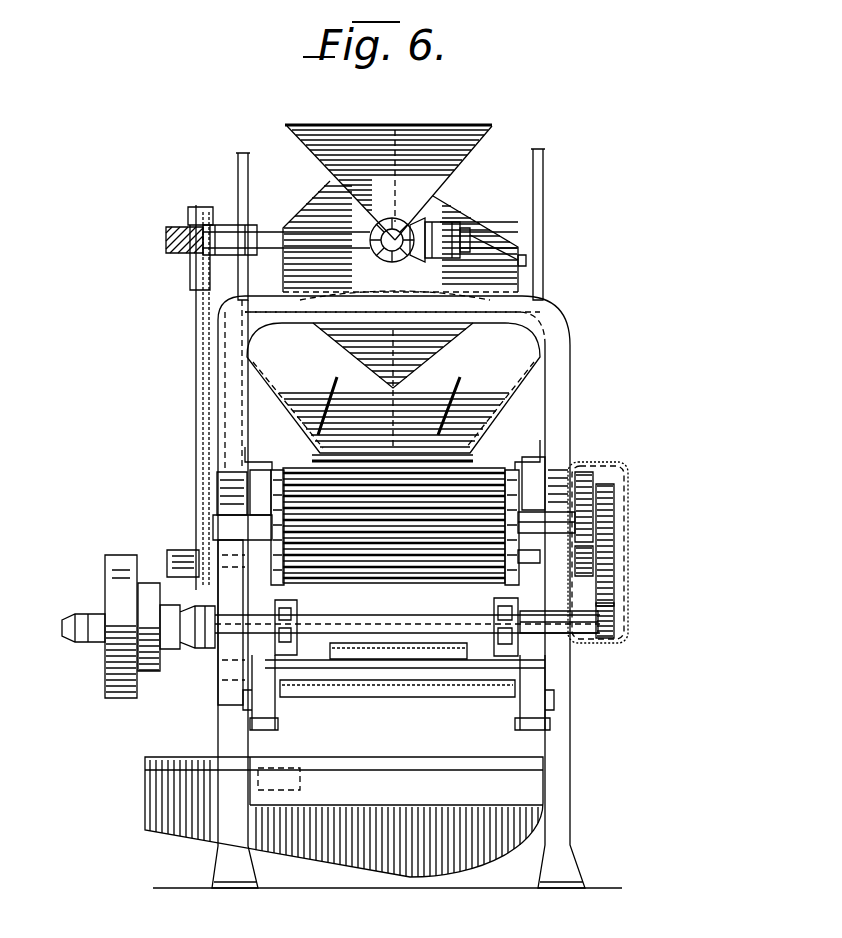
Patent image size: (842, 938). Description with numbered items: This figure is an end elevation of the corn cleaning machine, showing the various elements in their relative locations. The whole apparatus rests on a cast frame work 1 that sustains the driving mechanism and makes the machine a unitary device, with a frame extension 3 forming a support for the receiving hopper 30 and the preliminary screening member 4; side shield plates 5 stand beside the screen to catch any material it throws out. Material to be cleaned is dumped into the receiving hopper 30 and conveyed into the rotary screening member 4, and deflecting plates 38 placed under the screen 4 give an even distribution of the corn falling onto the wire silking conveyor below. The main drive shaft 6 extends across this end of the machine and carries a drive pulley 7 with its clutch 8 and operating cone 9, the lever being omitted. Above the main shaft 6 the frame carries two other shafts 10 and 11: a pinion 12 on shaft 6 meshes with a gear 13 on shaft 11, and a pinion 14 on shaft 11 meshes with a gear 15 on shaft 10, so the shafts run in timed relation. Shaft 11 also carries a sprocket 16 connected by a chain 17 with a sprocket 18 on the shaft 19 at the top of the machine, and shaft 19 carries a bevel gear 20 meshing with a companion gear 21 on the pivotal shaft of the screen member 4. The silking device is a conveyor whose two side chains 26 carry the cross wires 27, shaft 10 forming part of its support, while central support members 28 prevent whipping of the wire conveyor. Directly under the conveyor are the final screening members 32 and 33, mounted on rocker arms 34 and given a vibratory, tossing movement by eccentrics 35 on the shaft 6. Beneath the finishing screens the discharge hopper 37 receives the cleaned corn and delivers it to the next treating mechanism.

The cast frame work 1 is at (220, 738).
The frame extension 3 is at (557, 382).
The preliminary screening member 4 is at (472, 236).
The side shield plates 5 is at (240, 190).
The main drive shaft 6 is at (368, 632).
The drive pulley 7 is at (118, 590).
The clutch 8 is at (147, 672).
The operating cone 9 is at (193, 650).
The shaft 10 is at (558, 534).
The shaft 11 is at (535, 562).
The pinion 12 is at (604, 638).
The gear 13 is at (612, 518).
The pinion 14 is at (584, 576).
The gear 15 is at (583, 474).
The sprocket 16 is at (222, 560).
The chain 17 is at (200, 343).
The sprocket 18 is at (180, 252).
The shaft 19 is at (262, 232).
The bevel gear 20 is at (455, 226).
The companion gear 21 is at (398, 222).
The side chains 26 is at (270, 483).
The cross wires 27 is at (450, 582).
The central support members 28 is at (282, 588).
The receiving hopper 30 is at (451, 125).
The final screening member 32 is at (393, 643).
The final screening member 33 is at (358, 686).
The rocker arms 34 is at (258, 683).
The eccentrics 35 is at (292, 614).
The discharge hopper 37 is at (400, 817).
The deflecting plates 38 is at (337, 376).